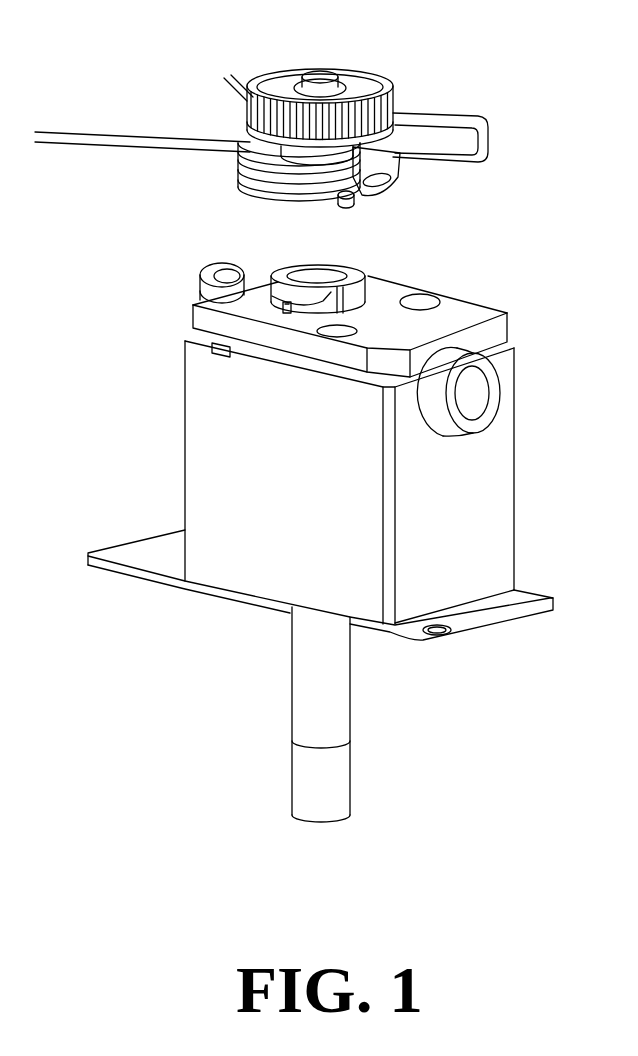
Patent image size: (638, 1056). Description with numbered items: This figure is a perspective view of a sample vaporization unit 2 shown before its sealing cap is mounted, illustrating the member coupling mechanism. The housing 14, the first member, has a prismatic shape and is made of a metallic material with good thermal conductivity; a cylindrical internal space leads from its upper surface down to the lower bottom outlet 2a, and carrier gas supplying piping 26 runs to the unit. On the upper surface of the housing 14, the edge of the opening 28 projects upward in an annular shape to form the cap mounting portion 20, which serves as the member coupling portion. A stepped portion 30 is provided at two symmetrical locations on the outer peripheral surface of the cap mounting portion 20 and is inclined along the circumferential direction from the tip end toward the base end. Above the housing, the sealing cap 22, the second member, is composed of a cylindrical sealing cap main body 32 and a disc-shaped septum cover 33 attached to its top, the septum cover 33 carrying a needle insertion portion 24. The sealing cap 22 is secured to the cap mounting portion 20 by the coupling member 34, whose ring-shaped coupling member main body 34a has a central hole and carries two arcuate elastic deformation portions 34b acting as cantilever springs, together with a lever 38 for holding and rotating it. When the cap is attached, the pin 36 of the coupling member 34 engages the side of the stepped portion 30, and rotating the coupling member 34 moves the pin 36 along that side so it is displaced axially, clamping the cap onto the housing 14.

The sample vaporization unit 2 is at (100, 243).
The outlet 2a is at (317, 826).
The housing 14 is at (502, 467).
The cap mounting portion 20 is at (355, 293).
The sealing cap 22 is at (193, 81).
The needle insertion portion 24 is at (320, 75).
The carrier gas supplying piping 26 is at (123, 141).
The opening 28 is at (315, 280).
The stepped portion 30 is at (287, 310).
The sealing cap main body 32 is at (305, 153).
The septum cover 33 is at (366, 87).
The coupling member 34 is at (160, 160).
The coupling member main body 34a is at (238, 163).
The elastic deformation portion 34b is at (238, 189).
The pin 36 is at (355, 202).
The lever 38 is at (463, 144).